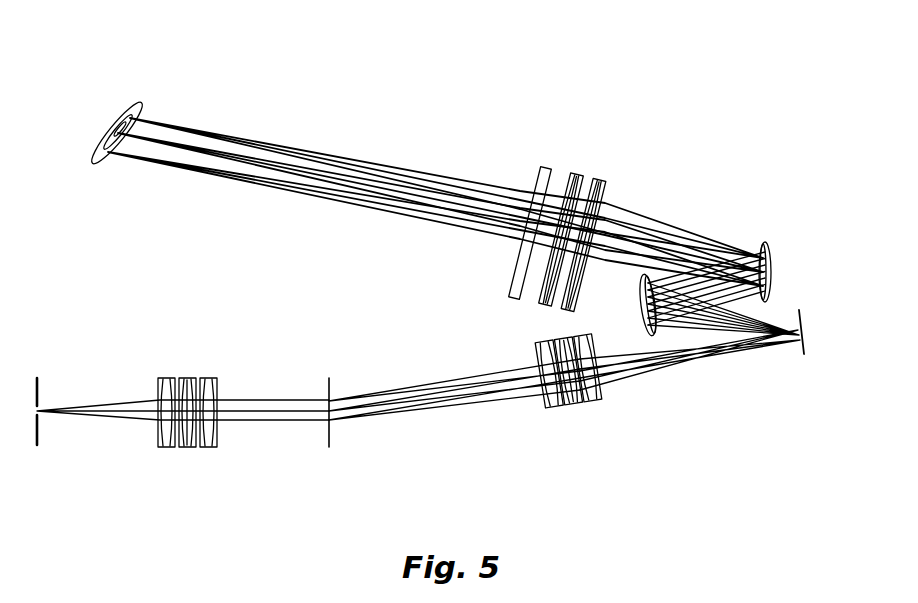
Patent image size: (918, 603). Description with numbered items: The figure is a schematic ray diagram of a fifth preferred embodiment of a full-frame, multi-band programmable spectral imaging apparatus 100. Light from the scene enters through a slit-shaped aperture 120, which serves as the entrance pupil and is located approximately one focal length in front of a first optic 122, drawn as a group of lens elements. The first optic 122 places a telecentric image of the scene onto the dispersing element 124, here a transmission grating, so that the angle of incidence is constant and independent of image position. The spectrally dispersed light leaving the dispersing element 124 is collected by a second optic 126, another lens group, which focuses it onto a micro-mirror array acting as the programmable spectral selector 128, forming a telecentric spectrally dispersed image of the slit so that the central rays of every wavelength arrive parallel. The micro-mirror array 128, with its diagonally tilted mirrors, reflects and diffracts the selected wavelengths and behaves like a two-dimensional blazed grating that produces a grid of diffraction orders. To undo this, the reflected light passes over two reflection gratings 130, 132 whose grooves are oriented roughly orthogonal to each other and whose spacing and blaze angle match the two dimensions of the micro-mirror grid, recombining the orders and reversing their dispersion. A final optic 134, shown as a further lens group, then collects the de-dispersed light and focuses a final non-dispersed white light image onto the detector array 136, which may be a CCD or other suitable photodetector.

The full-frame, multi-band programmable spectral imaging apparatus 100 is at (392, 82).
The slit-shaped aperture 120 is at (37, 376).
The first optic 122 is at (184, 453).
The dispersing element 124 is at (333, 448).
The second optic 126 is at (606, 396).
The programmable spectral selector 128 is at (810, 329).
The reflection grating 130 is at (640, 283).
The reflection grating 132 is at (771, 256).
The final optic 134 is at (608, 196).
The detector array 136 is at (147, 112).